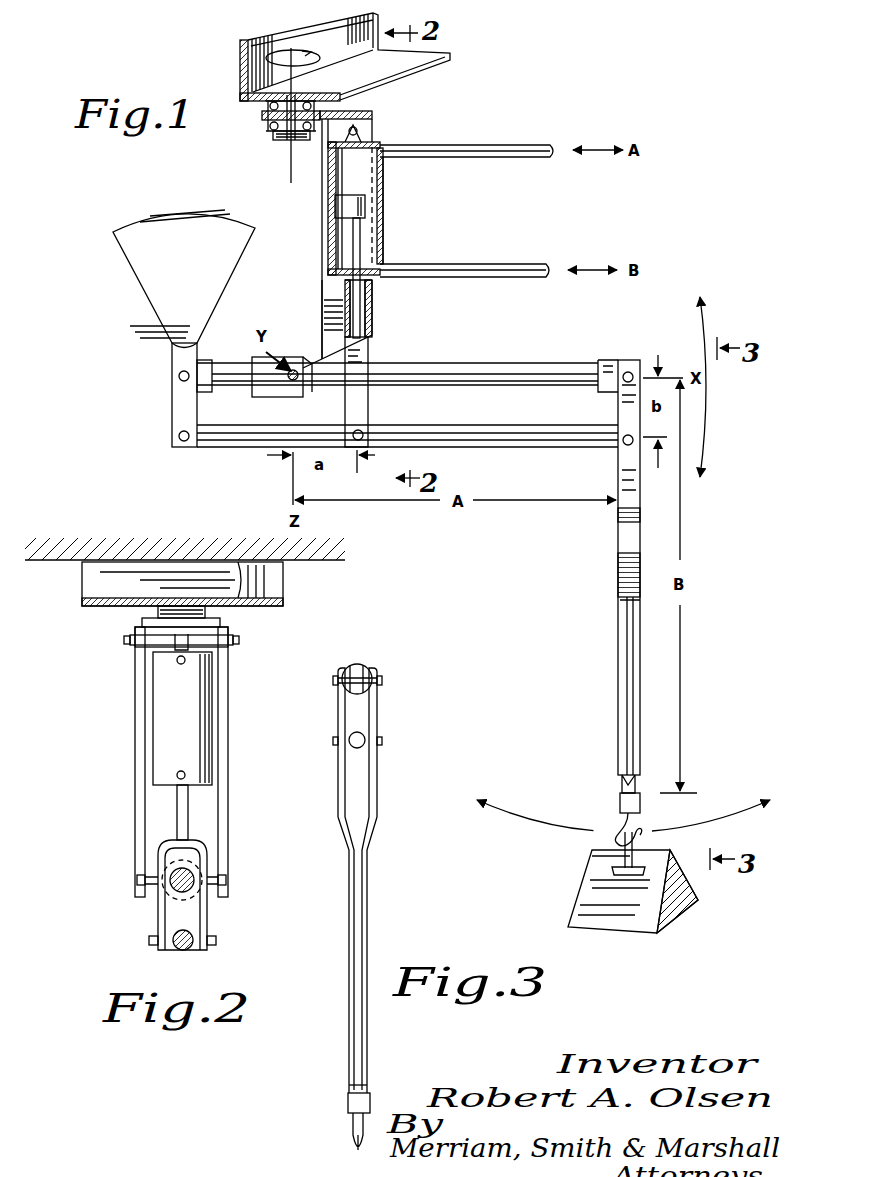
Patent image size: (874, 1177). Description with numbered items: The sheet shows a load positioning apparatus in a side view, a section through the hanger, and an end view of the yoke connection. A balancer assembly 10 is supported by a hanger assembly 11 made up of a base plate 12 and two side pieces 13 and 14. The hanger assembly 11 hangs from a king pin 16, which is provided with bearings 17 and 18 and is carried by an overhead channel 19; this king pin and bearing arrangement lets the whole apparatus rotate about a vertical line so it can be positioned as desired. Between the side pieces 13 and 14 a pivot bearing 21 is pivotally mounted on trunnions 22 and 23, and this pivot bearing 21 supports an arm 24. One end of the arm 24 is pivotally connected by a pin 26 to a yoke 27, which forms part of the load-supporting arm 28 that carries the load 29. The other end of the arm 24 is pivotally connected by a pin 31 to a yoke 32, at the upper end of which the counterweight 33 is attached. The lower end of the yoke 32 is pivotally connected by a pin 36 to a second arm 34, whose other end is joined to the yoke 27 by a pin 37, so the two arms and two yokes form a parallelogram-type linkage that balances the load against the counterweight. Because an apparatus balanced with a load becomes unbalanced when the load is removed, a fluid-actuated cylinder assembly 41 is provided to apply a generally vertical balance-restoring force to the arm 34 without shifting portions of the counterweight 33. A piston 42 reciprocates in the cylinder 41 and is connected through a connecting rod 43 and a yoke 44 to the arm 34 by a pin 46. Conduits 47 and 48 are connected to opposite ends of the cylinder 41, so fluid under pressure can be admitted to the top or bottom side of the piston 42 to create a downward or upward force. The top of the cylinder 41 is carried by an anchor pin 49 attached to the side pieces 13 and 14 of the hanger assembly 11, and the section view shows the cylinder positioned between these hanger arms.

In FIG. 1, the balancer assembly 10 is at (505, 362).
In FIG. 1, the hanger assembly 11 is at (320, 180).
In FIG. 2, the hanger assembly 11 is at (230, 688).
In FIG. 1, the base plate 12 is at (372, 112).
In FIG. 2, the base plate 12 is at (215, 625).
In FIG. 2, the side piece 13 is at (137, 758).
In FIG. 1, the side piece 14 is at (372, 316).
In FIG. 2, the side piece 14 is at (228, 760).
In FIG. 1, the king pin 16 is at (288, 142).
In FIG. 1, the bearing 17 is at (266, 112).
In FIG. 1, the bearing 18 is at (270, 138).
In FIG. 1, the channel 19 is at (240, 60).
In FIG. 2, the channel 19 is at (285, 585).
In FIG. 1, the pivot bearing 21 is at (262, 360).
In FIG. 2, the pivot bearing 21 is at (170, 870).
In FIG. 1, the trunnion 22 is at (290, 383).
In FIG. 2, the trunnion 22 is at (138, 880).
In FIG. 2, the trunnion 23 is at (226, 880).
In FIG. 1, the arm 24 is at (468, 388).
In FIG. 2, the arm 24 is at (178, 888).
In FIG. 3, the arm 24 is at (360, 664).
In FIG. 1, the pin 26 is at (630, 375).
In FIG. 3, the pin 26 is at (383, 680).
In FIG. 1, the yoke 27 is at (618, 408).
In FIG. 3, the yoke 27 is at (378, 720).
In FIG. 1, the load-supporting arm 28 is at (622, 684).
In FIG. 3, the load-supporting arm 28 is at (350, 1050).
In FIG. 1, the load 29 is at (688, 905).
In FIG. 1, the pin 31 is at (179, 376).
In FIG. 1, the yoke 32 is at (174, 405).
In FIG. 1, the counterweight 33 is at (225, 281).
In FIG. 1, the arm 34 is at (258, 440).
In FIG. 2, the arm 34 is at (180, 945).
In FIG. 3, the arm 34 is at (357, 750).
In FIG. 1, the pin 36 is at (179, 436).
In FIG. 1, the pin 37 is at (625, 443).
In FIG. 3, the pin 37 is at (383, 741).
In FIG. 1, the fluid-actuated cylinder assembly 41 is at (380, 185).
In FIG. 2, the fluid-actuated cylinder assembly 41 is at (212, 725).
In FIG. 1, the piston 42 is at (365, 207).
In FIG. 1, the connecting rod 43 is at (355, 246).
In FIG. 2, the connecting rod 43 is at (178, 798).
In FIG. 1, the yoke 44 is at (368, 372).
In FIG. 2, the yoke 44 is at (207, 918).
In FIG. 1, the pin 46 is at (363, 432).
In FIG. 2, the pin 46 is at (216, 942).
In FIG. 1, the conduit 47 is at (548, 148).
In FIG. 1, the conduit 48 is at (545, 266).
In FIG. 1, the anchor pin 49 is at (360, 128).
In FIG. 2, the anchor pin 49 is at (233, 640).